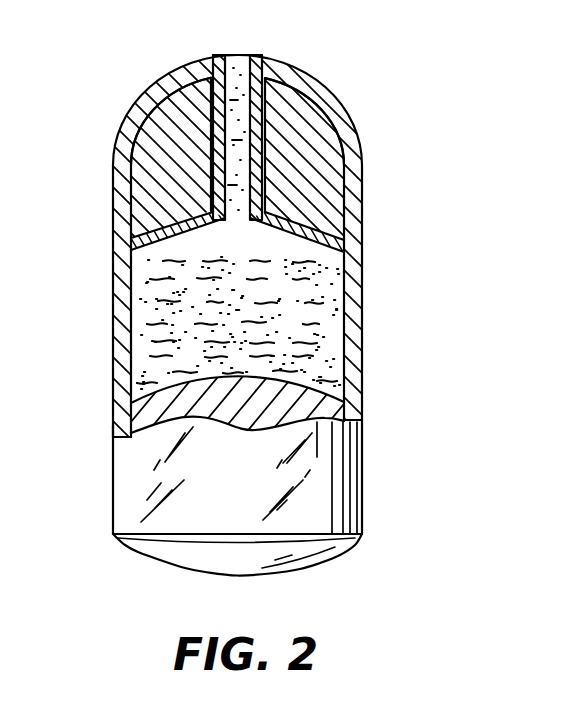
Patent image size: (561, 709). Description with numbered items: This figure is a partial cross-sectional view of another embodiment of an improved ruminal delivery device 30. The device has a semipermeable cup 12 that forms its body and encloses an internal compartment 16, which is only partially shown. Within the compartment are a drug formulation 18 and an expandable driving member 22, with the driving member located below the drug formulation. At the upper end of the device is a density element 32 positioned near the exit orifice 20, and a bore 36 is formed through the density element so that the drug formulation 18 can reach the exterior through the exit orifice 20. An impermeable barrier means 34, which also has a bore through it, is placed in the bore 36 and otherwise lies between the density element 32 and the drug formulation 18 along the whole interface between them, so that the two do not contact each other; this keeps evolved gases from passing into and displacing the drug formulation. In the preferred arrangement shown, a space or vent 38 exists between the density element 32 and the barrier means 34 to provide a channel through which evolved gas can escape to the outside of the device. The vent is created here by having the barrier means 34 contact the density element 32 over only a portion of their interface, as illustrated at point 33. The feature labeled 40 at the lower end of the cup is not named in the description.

The ruminal delivery device 30 is at (414, 110).
The internal compartment 16 is at (113, 318).
The semipermeable cup 12 is at (113, 462).
The bottom end 40 is at (327, 556).
The density element 32 is at (316, 124).
The impermeable barrier means 34 is at (287, 159).
The point 33 is at (131, 228).
The bore 36 is at (236, 157).
The vent 38 is at (218, 55).
The exit orifice 20 is at (237, 55).
The drug formulation 18 is at (330, 320).
The expandable driving member 22 is at (317, 410).